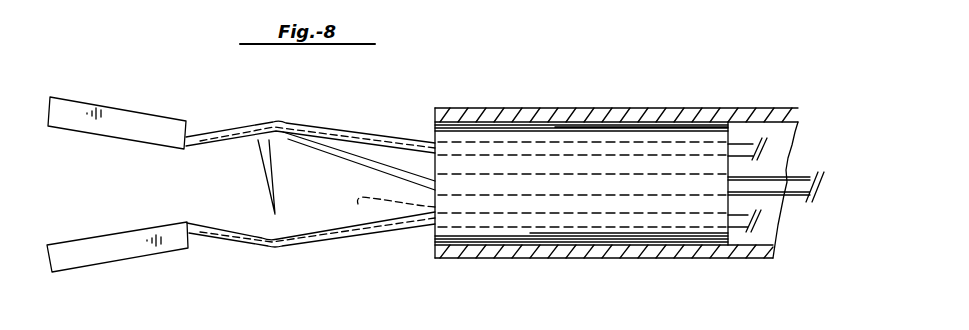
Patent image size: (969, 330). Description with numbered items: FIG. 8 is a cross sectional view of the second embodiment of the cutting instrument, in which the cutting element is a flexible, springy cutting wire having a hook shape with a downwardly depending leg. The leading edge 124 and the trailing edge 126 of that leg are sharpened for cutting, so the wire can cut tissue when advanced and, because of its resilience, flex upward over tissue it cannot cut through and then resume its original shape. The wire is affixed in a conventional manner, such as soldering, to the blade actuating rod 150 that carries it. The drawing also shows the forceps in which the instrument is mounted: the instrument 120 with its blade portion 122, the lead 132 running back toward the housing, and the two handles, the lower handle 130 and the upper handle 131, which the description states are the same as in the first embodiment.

The forceps instrument 120 is at (253, 179).
The upper arm blade 122 is at (258, 150).
The leading edge 124 is at (266, 198).
The trailing edge 126 is at (268, 181).
The lower handle 130 is at (138, 258).
The upper handle 131 is at (110, 105).
The conductor lead 132 is at (387, 209).
The blade actuating rod 150 is at (770, 177).